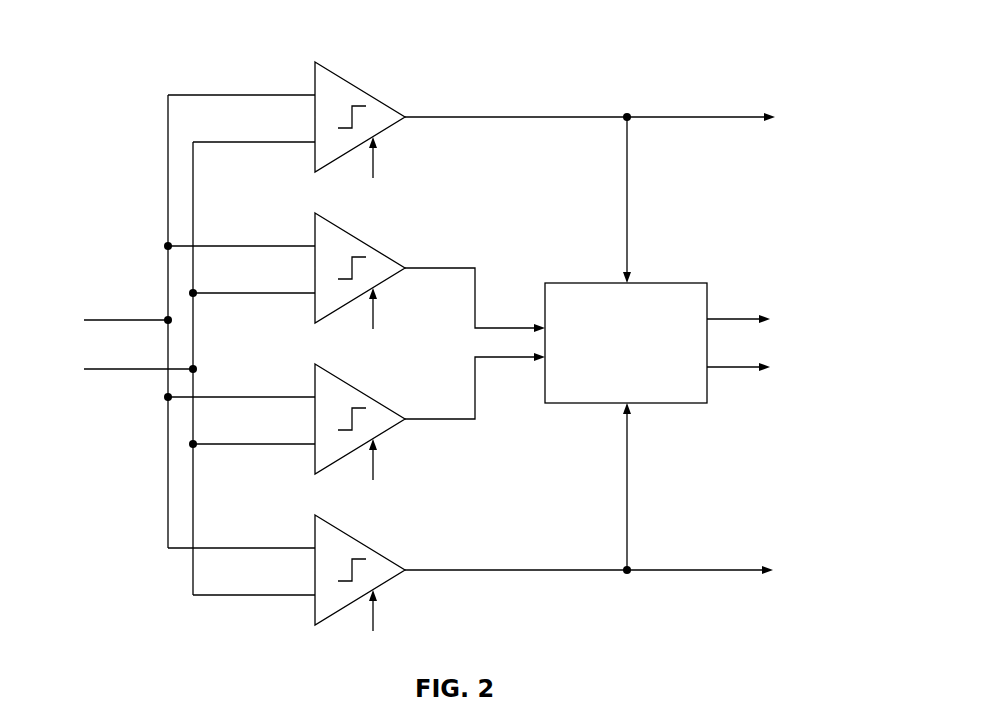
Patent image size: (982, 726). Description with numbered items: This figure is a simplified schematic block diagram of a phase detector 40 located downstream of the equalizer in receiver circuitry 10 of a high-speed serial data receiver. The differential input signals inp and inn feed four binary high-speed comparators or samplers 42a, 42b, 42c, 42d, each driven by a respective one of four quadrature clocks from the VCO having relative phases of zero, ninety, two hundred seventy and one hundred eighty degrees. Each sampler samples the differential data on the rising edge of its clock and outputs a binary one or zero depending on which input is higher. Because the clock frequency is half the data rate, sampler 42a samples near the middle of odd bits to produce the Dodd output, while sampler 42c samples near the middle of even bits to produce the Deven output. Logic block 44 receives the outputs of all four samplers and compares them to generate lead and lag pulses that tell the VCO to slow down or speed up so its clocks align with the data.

The receiver circuitry 10 is at (100, 40).
The phase detector 40 is at (478, 66).
The sampler 42a is at (315, 76).
The sampler 42b is at (315, 227).
The sampler 42c is at (315, 530).
The sampler 42d is at (315, 378).
The logic block 44 is at (598, 283).